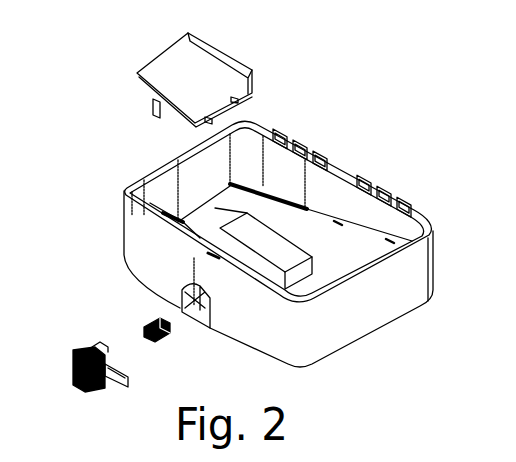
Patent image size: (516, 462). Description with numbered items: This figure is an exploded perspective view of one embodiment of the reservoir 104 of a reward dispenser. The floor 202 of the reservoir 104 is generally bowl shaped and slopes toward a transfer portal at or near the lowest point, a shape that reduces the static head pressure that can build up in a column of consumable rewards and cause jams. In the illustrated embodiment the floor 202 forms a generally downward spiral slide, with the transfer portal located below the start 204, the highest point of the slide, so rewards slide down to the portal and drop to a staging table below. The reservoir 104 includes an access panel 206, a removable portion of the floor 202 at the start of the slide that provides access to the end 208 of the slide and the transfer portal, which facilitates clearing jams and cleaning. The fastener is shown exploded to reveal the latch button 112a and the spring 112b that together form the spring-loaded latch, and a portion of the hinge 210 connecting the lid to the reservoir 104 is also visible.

The reservoir 104 is at (100, 83).
The floor 202 is at (348, 255).
The start of the slide 204 is at (250, 253).
The access panel 206 is at (205, 78).
The end of the slide 208 is at (163, 225).
The hinge 210 is at (325, 160).
The latch button 112a is at (85, 346).
The spring 112b is at (147, 321).